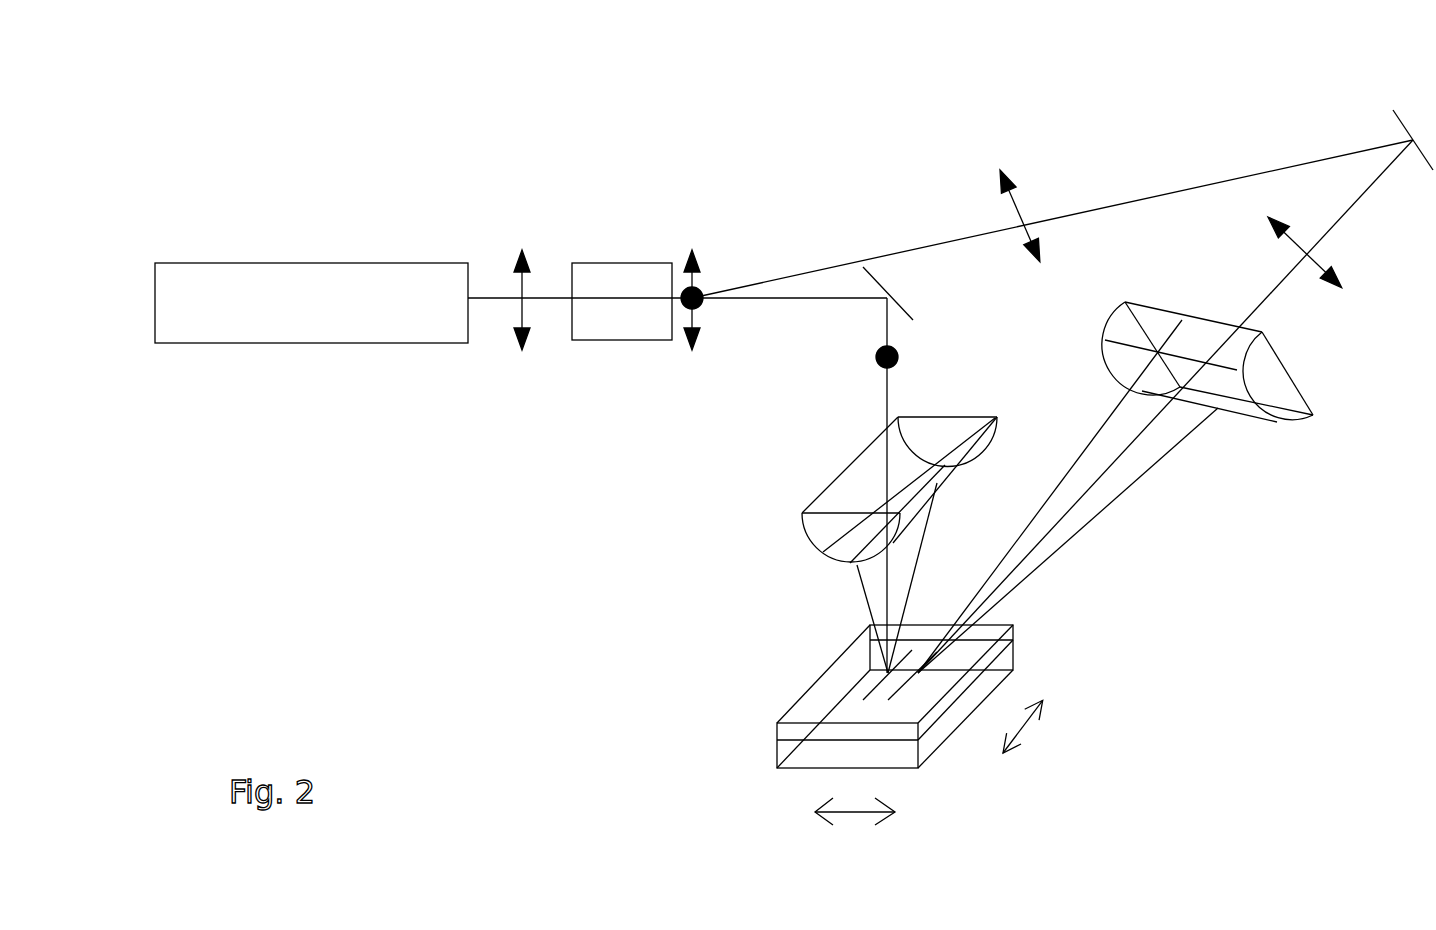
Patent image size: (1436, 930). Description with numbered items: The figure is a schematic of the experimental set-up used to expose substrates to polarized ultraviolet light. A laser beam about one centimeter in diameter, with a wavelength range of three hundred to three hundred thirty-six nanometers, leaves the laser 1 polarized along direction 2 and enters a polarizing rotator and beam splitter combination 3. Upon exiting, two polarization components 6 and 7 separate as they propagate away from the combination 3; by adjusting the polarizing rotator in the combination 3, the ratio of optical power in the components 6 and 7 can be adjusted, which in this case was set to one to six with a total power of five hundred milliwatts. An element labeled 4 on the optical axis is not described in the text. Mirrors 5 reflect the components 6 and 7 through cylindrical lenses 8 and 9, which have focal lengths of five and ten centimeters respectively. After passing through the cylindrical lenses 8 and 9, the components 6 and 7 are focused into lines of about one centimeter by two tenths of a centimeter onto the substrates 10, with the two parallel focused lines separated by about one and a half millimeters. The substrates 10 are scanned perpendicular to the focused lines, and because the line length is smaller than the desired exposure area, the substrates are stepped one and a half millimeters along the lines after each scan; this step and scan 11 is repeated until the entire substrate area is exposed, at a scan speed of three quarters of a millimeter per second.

The laser 1 is at (330, 328).
The polarization direction 2 is at (522, 350).
The polarizing rotator and beam splitter combination 3 is at (623, 328).
The beam splitter 4 is at (690, 350).
The mirrors 5 is at (877, 272).
The polarization component 6 is at (1033, 260).
The polarization component 7 is at (875, 357).
The cylindrical lens 8 is at (1270, 413).
The cylindrical lens 9 is at (817, 523).
The substrates 10 is at (1010, 622).
The step and scan 11 is at (993, 763).